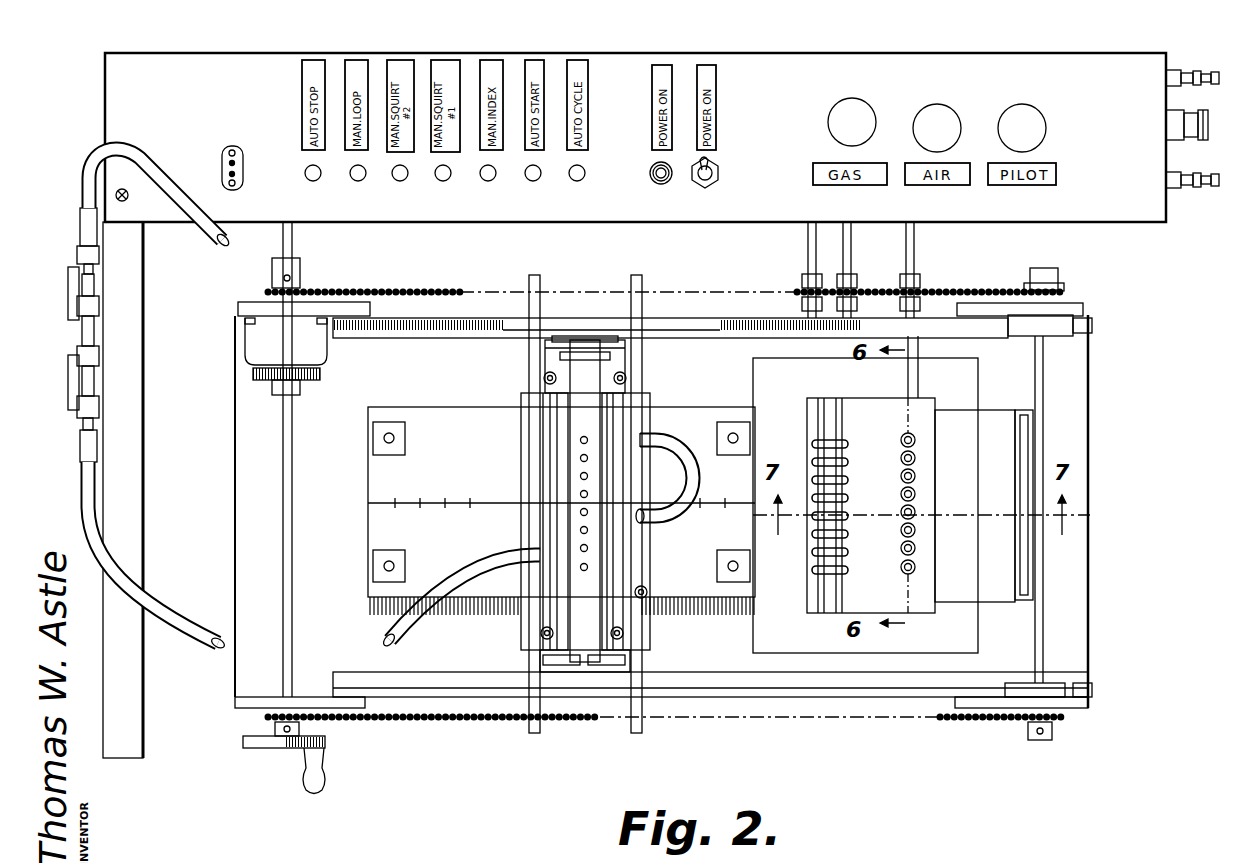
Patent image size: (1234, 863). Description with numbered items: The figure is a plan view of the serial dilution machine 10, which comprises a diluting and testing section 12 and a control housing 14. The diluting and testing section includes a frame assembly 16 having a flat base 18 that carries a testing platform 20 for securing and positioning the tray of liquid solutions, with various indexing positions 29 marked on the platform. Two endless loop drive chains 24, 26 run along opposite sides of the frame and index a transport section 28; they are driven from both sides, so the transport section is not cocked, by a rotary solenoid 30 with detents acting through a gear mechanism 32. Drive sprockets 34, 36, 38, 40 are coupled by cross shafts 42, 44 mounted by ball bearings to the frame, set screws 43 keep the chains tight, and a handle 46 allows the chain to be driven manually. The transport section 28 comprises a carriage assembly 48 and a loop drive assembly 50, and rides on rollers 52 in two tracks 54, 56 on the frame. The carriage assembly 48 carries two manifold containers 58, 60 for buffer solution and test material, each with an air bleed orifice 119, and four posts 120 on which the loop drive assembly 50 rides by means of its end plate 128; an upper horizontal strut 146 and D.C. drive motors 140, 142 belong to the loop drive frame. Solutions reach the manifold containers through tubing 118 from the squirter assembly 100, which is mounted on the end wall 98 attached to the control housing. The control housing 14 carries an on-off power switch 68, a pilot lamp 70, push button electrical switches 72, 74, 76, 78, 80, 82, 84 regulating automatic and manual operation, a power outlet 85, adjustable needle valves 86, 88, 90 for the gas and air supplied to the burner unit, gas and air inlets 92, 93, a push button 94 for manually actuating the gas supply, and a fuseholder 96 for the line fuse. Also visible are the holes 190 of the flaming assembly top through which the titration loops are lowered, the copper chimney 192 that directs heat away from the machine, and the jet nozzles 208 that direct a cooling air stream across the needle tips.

The serial dilution machine 10 is at (1134, 374).
The diluting and testing section 12 is at (227, 482).
The control housing 14 is at (1108, 224).
The frame assembly 16 is at (1090, 310).
The flat base 18 is at (1075, 650).
The testing platform 20 is at (480, 484).
The endless loop drive chain 24 is at (472, 722).
The endless loop drive chain 26 is at (432, 290).
The transport section 28 is at (510, 524).
The indexing positions 29 is at (398, 508).
The rotary solenoid 30 is at (243, 340).
The gear mechanism 32 is at (251, 375).
The drive sprocket 34 is at (270, 720).
The drive sprocket 36 is at (300, 290).
The drive sprocket 38 is at (1065, 292).
The drive sprocket 40 is at (1050, 725).
The cross shaft 42 is at (1043, 620).
The set screws 43 is at (1094, 325).
The cross shaft 44 is at (280, 519).
The handle 46 is at (260, 750).
The carriage assembly 48 is at (625, 634).
The loop drive assembly 50 is at (592, 434).
The rollers 52 is at (545, 320).
The track 54 is at (730, 680).
The track 56 is at (688, 318).
The manifold container 58 is at (650, 438).
The manifold container 60 is at (521, 424).
The on-off power switch 68 is at (716, 170).
The pilot lamp 70 is at (655, 183).
The push button electrical switch 72 is at (576, 181).
The push button electrical switch 74 is at (532, 181).
The push button electrical switch 76 is at (487, 181).
The push button electrical switch 78 is at (442, 181).
The push button electrical switch 80 is at (399, 181).
The push button electrical switch 82 is at (357, 181).
The push button electrical switch 84 is at (312, 181).
The power outlet 85 is at (222, 148).
The needle valve 86 is at (860, 112).
The needle valve 88 is at (945, 116).
The needle valve 90 is at (1030, 116).
The gas inlet 92 is at (1190, 188).
The air inlet 93 is at (1206, 70).
The push button 94 is at (1165, 122).
The fuseholder 96 is at (1178, 145).
The end wall 98 is at (125, 670).
The squirter assembly 100 is at (50, 322).
The tubing 118 is at (184, 224).
The air bleed orifice 119 is at (646, 580).
The posts 120 is at (543, 378).
The end plate 128 is at (540, 342).
The D.C. drive motor 140 is at (598, 336).
The D.C. drive motor 142 is at (630, 660).
The upper horizontal strut 146 is at (520, 448).
The holes 190 is at (952, 528).
The copper chimney 192 is at (990, 412).
The jet nozzles 208 is at (838, 515).